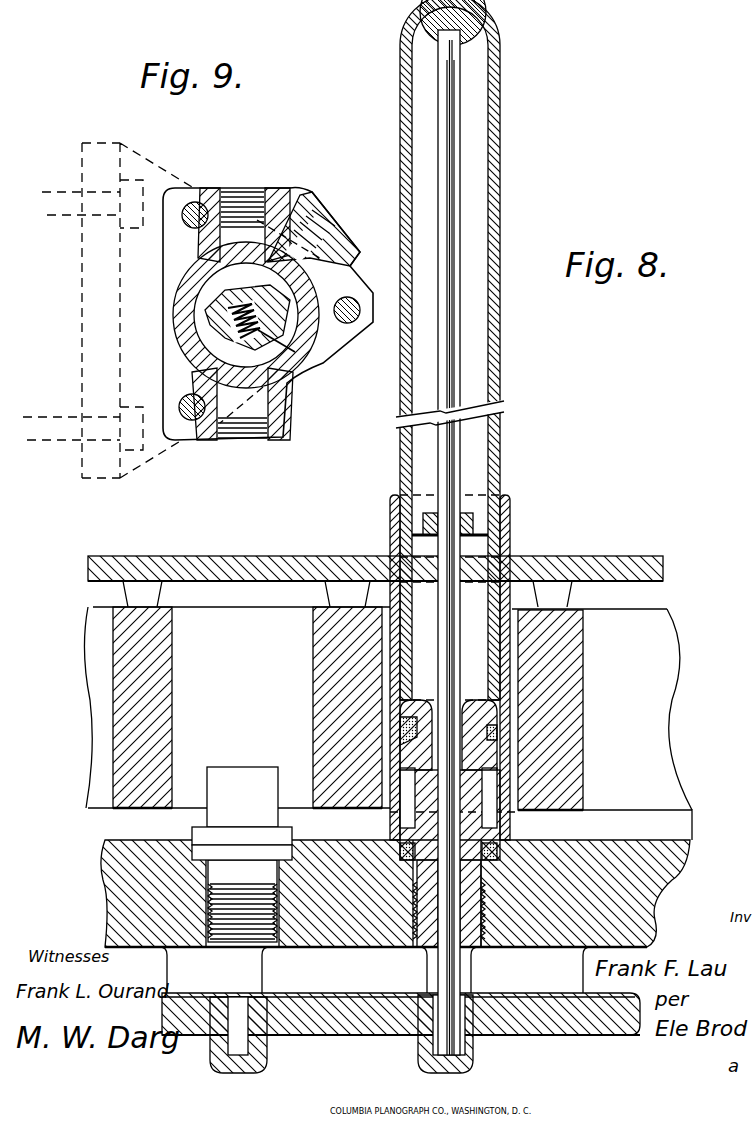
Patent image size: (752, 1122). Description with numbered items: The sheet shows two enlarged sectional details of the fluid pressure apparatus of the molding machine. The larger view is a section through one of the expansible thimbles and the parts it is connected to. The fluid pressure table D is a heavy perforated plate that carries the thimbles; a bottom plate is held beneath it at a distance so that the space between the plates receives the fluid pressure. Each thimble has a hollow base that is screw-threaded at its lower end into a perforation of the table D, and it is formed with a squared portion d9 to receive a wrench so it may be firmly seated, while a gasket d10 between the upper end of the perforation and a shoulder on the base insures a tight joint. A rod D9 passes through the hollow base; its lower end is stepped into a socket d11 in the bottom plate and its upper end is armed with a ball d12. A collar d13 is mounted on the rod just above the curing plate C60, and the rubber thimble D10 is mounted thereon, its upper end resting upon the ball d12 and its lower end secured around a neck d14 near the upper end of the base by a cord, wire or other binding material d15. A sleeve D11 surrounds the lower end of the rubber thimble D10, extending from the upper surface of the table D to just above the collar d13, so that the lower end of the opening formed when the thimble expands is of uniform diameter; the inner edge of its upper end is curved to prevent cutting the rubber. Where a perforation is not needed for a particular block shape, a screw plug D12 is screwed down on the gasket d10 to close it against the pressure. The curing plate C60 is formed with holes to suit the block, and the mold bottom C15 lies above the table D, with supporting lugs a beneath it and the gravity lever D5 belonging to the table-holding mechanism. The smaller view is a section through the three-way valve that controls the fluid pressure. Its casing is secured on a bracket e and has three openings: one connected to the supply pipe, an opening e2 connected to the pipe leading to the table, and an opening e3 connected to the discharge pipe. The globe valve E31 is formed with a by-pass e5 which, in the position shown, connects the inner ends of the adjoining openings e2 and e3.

In FIG. 9, the bracket e is at (107, 310).
In FIG. 9, the valve casing opening e2 is at (242, 195).
In FIG. 9, the valve casing opening e3 is at (308, 229).
In FIG. 9, the by-pass e5 is at (247, 312).
In FIG. 9, the valve E31 is at (295, 352).
In FIG. 8, the curing plate C60 is at (625, 545).
In FIG. 8, the casing wall C15 is at (583, 680).
In FIG. 8, the fluid pressure table D is at (635, 883).
In FIG. 8, the screw plug D12 is at (245, 787).
In FIG. 8, the gravity lever D5 is at (431, 881).
In FIG. 8, the squared portion d9 is at (490, 815).
In FIG. 8, the gasket d10 is at (497, 860).
In FIG. 8, the binding material d15 is at (490, 732).
In FIG. 8, the neck d14 is at (492, 745).
In FIG. 8, the spacer blocks a is at (583, 970).
In FIG. 8, the socket d11 is at (473, 1050).
In FIG. 8, the sleeve D11 is at (512, 540).
In FIG. 8, the collar d13 is at (480, 525).
In FIG. 8, the ball d12 is at (470, 20).
In FIG. 8, the rod D9 is at (440, 665).
In FIG. 8, the rubber thimble D10 is at (505, 222).